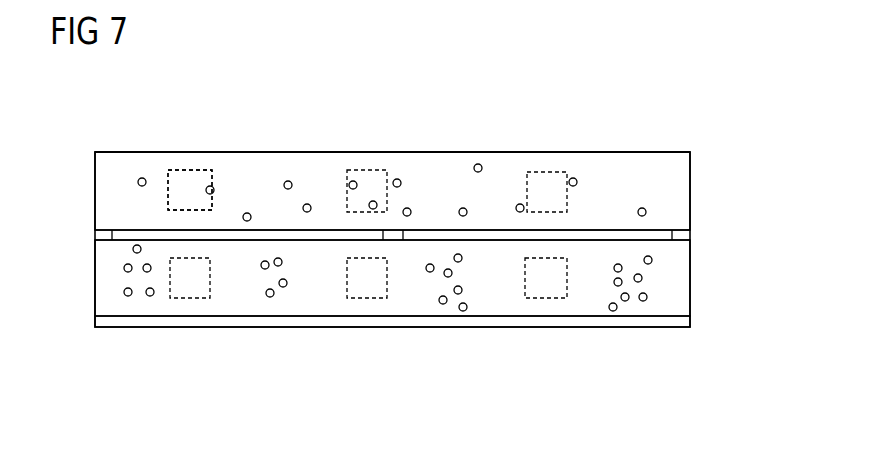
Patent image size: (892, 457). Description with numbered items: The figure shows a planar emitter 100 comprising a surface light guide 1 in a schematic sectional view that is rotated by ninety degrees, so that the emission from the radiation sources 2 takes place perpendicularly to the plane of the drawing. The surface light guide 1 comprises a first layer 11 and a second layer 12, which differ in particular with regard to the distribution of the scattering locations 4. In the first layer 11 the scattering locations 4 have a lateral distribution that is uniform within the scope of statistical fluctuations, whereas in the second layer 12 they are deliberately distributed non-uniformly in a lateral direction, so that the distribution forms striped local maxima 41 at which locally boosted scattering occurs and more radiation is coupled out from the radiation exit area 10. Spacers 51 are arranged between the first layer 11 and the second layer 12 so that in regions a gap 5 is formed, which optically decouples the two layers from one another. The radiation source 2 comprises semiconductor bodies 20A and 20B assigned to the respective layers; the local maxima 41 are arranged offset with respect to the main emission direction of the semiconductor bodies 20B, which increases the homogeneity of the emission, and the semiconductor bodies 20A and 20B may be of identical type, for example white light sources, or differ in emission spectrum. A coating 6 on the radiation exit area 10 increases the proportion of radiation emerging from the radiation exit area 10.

The planar emitter 100 is at (468, 96).
The surface light guide 1 is at (643, 146).
The radiation exit area 10 is at (277, 152).
The first layer 11 is at (683, 196).
The second layer 12 is at (683, 283).
The gap 5 is at (262, 232).
The spacer 51 is at (95, 230).
The coating 6 is at (683, 325).
The radiation source 2 is at (187, 168).
The semiconductor body 20A is at (168, 198).
The semiconductor body 20B is at (190, 296).
The scattering location 4 is at (578, 182).
The local maximum 41 is at (138, 298).